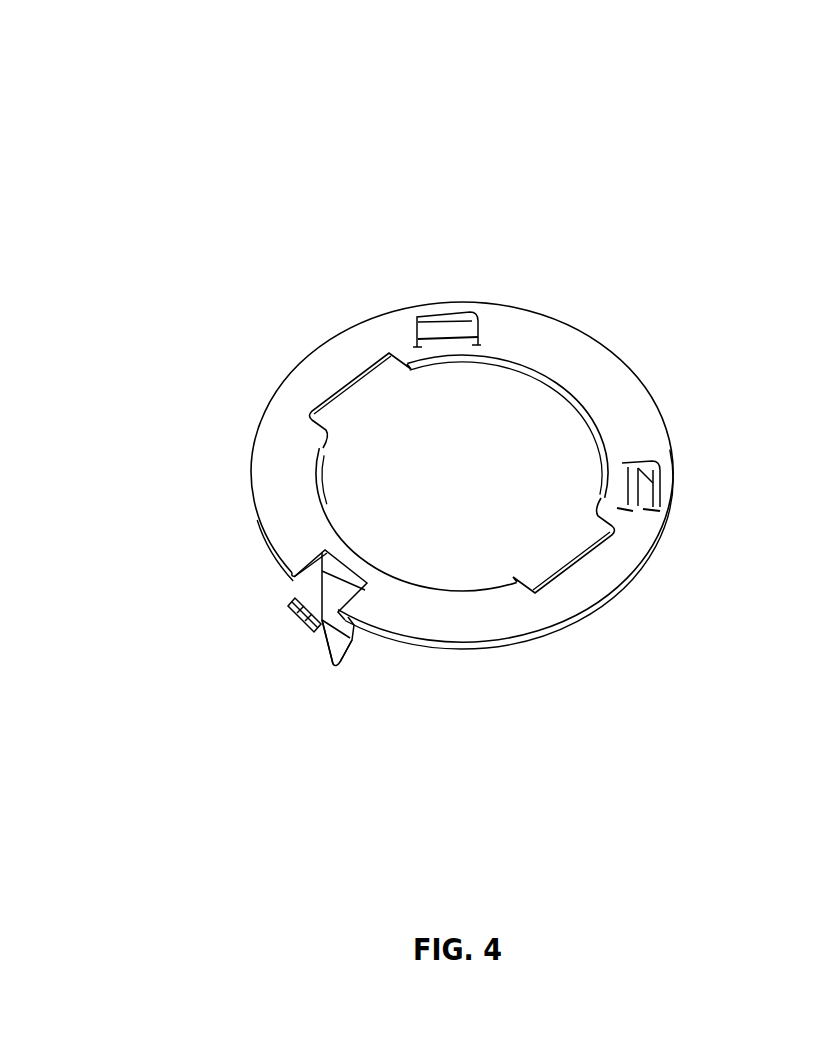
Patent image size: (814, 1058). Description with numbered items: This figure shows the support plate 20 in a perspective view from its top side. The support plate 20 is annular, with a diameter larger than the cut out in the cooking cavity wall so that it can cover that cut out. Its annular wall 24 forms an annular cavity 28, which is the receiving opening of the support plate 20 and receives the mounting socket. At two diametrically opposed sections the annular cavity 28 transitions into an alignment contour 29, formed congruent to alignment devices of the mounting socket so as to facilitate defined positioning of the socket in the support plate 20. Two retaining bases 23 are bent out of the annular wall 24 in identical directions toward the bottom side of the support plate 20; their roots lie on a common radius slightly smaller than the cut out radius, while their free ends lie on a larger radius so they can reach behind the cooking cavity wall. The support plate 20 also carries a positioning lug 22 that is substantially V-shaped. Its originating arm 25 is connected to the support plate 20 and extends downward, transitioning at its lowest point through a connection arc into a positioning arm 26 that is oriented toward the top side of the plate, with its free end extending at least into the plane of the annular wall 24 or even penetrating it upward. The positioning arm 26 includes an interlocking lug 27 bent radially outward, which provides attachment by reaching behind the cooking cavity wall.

The support plate 20 is at (633, 272).
The positioning lug 22 is at (330, 680).
The retaining bases 23 is at (456, 330).
The annular wall 24 is at (613, 407).
The originating arm 25 is at (355, 653).
The positioning arm 26 is at (307, 663).
The interlocking lug 27 is at (277, 628).
The annular cavity 28 is at (468, 488).
The alignment contour 29 is at (363, 392).